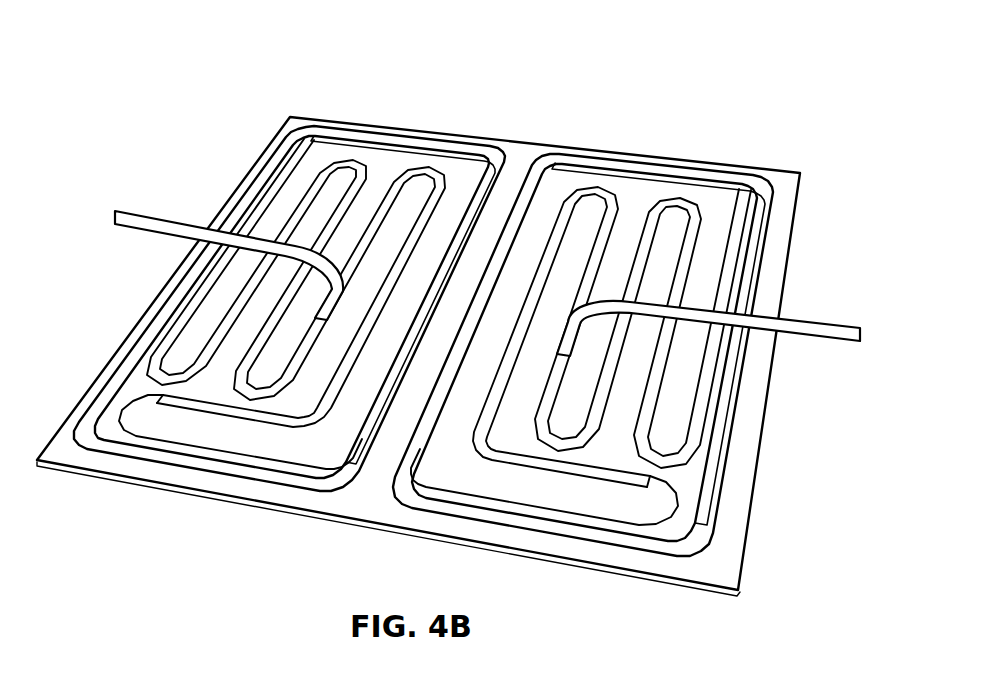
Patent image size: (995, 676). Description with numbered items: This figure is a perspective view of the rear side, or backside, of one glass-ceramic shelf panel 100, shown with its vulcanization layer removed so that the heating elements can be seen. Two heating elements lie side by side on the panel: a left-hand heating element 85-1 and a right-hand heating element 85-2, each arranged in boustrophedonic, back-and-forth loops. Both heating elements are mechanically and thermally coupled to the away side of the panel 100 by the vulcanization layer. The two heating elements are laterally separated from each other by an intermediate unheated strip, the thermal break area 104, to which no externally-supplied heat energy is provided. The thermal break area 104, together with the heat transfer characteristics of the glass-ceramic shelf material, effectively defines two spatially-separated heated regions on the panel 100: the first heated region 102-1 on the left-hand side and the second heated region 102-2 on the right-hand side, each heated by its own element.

The glass-ceramic panel 100 is at (117, 467).
The first heated region 102-1 is at (523, 128).
The second heated region 102-2 is at (793, 157).
The thermal break area 104 is at (523, 163).
The left-hand heating element 85-1 is at (266, 180).
The right-hand heating element 85-2 is at (750, 230).